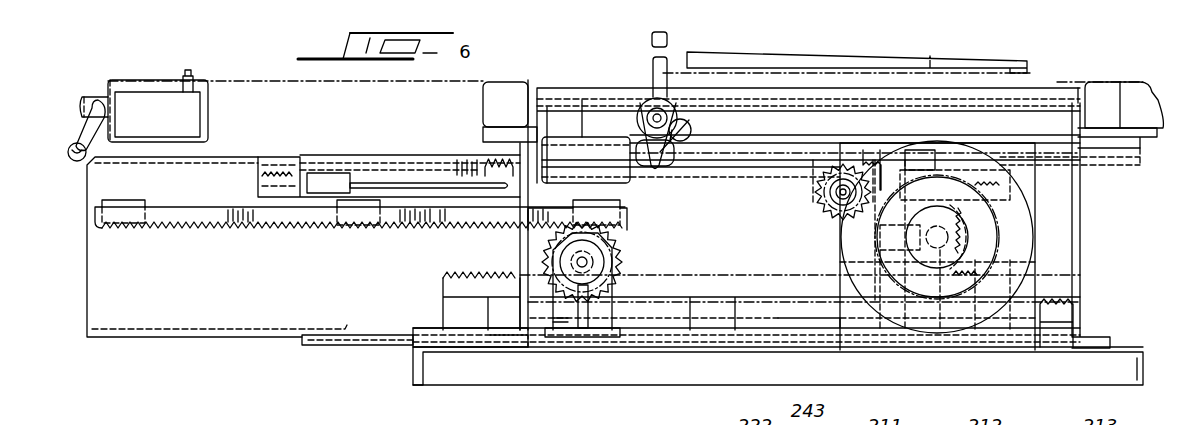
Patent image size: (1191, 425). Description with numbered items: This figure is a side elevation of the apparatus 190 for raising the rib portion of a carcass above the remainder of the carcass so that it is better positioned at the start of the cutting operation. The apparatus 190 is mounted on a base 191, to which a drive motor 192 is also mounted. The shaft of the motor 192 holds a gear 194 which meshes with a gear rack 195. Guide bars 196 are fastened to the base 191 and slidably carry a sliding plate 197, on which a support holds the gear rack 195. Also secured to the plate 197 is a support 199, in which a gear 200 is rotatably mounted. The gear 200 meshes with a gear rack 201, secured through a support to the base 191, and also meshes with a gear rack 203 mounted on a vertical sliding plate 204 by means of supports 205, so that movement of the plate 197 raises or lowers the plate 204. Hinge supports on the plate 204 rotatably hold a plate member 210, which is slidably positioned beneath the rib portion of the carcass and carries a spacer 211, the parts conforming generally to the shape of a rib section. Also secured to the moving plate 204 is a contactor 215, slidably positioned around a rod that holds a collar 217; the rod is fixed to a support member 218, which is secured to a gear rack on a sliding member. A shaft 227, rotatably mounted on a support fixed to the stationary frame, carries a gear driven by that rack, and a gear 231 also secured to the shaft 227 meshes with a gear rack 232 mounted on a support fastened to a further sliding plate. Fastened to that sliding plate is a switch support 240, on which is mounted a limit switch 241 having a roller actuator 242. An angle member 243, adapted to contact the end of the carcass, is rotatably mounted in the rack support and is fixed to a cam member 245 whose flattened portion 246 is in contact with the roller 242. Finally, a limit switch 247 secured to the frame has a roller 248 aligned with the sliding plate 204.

The apparatus 190 is at (1155, 212).
The base 191 is at (1132, 375).
The motor 192 is at (1013, 250).
The gear 194 is at (985, 241).
The gear rack 195 is at (482, 279).
The guide bars 196 is at (423, 337).
The sliding plate 197 is at (372, 346).
The support 199 is at (600, 316).
The gear 200 is at (612, 252).
The gear rack 201 is at (660, 298).
The gear rack 203 is at (410, 214).
The vertical sliding plate 204 is at (262, 283).
The supports 205 is at (130, 202).
The plate member 210 is at (1023, 72).
The spacer 211 is at (742, 60).
The contactor 215 is at (335, 183).
The collar 217 is at (932, 159).
The support member 218 is at (1015, 197).
The shaft 227 is at (843, 188).
The gear 231 is at (818, 189).
The gear rack 232 is at (880, 170).
The switch support 240 is at (595, 118).
The limit switch 241 is at (570, 160).
The roller actuator 242 is at (692, 131).
The angle member 243 is at (664, 40).
The cam member 245 is at (648, 110).
The flattened portion 246 is at (660, 150).
The limit switch 247 is at (150, 95).
The roller 248 is at (70, 158).